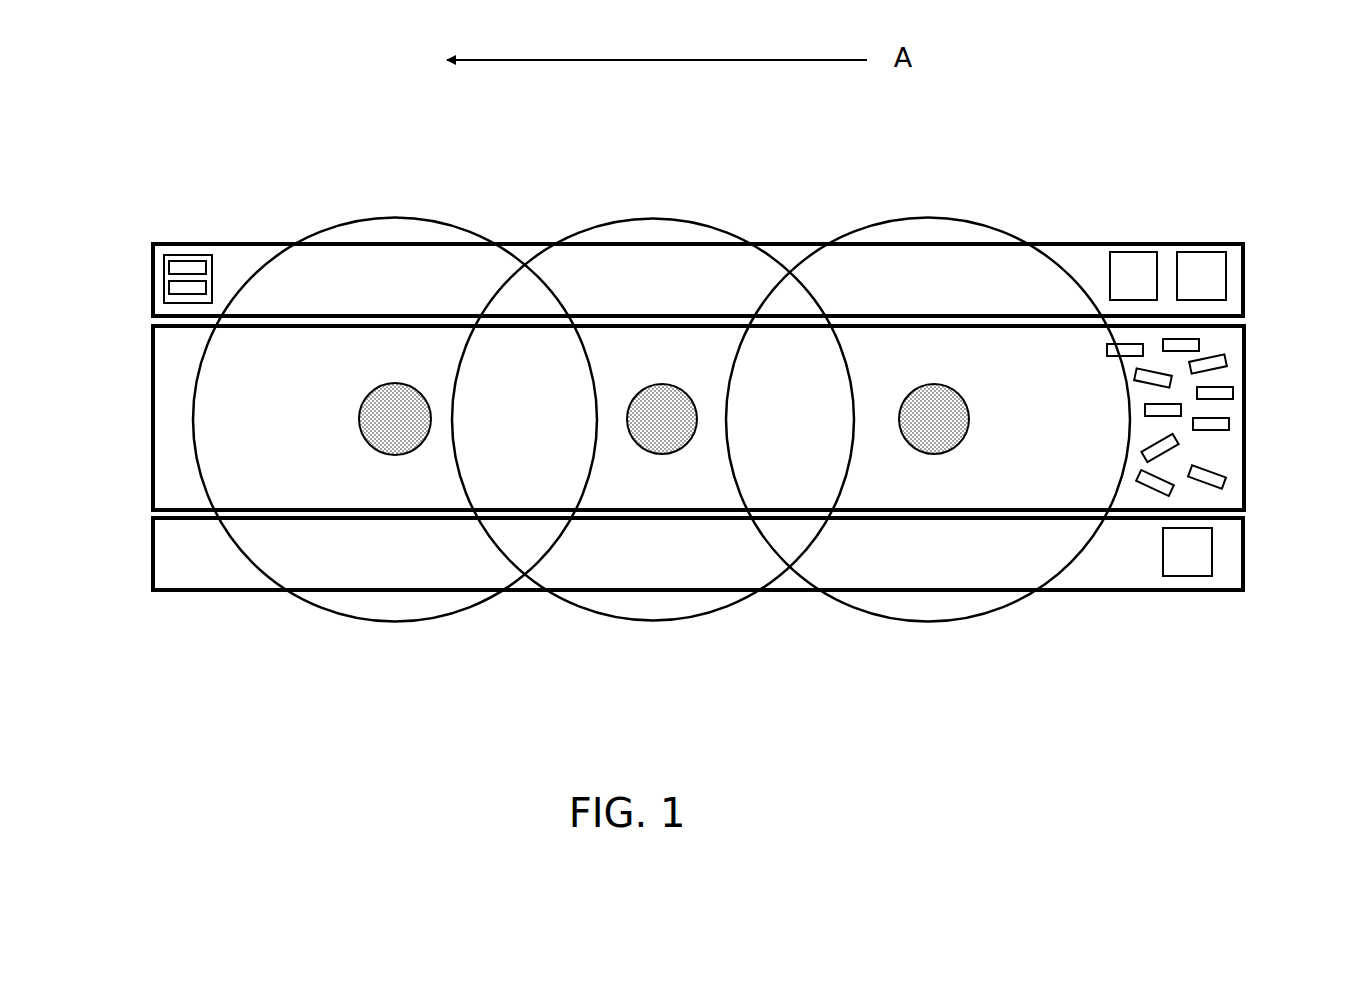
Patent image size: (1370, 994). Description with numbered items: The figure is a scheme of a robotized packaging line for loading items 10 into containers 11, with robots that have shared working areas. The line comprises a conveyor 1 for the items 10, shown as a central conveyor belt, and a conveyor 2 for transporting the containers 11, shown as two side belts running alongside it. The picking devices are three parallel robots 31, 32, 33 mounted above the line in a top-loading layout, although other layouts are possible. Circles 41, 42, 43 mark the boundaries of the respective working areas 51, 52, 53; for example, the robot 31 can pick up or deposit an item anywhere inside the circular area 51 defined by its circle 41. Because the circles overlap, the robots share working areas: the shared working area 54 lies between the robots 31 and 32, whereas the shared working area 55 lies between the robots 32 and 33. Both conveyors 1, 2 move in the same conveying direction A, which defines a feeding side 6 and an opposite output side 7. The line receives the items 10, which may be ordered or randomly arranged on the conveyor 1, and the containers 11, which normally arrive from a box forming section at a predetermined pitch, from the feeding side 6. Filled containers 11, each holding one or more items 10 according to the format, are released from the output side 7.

The conveyor 1 is at (1244, 483).
The conveyor 2 is at (1234, 272).
The feeding side 6 is at (1165, 660).
The output side 7 is at (172, 633).
The items 10 is at (188, 265).
The containers 11 is at (212, 273).
The parallel robot 31 is at (363, 438).
The parallel robot 32 is at (662, 453).
The parallel robot 33 is at (963, 440).
The circle 41 is at (410, 622).
The circle 42 is at (657, 622).
The circle 43 is at (937, 622).
The working area 51 is at (289, 398).
The working area 52 is at (647, 382).
The working area 53 is at (1049, 388).
The shared working area 54 is at (536, 445).
The shared working area 55 is at (806, 445).